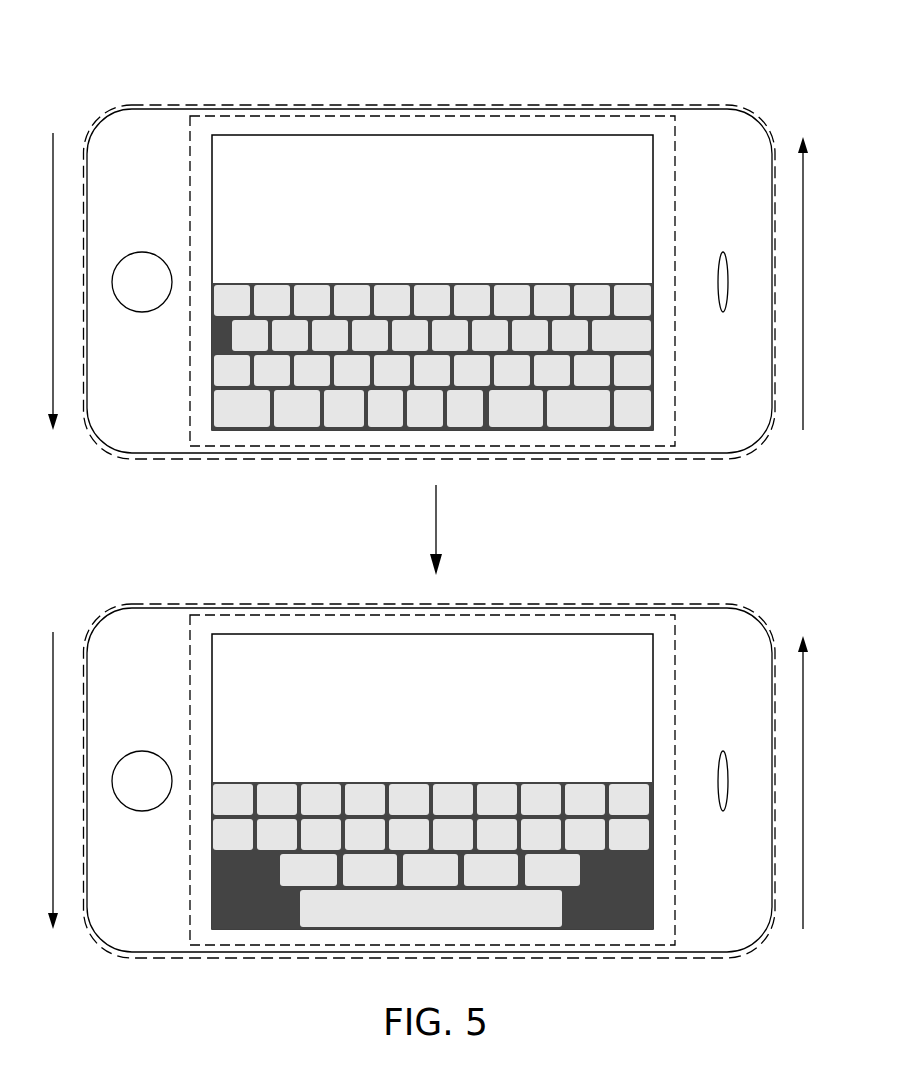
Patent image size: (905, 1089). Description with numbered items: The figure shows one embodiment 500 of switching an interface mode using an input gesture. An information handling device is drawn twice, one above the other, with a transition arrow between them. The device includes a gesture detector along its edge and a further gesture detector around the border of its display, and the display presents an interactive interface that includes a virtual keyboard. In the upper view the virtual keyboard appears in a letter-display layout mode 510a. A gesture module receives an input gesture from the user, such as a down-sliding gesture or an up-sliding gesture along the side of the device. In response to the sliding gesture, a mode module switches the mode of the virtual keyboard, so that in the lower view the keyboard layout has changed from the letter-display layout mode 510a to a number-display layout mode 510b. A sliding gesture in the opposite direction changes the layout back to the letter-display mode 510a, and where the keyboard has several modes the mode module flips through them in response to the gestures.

The embodiment of switching an interface mode 500 is at (121, 42).
The letter-display layout mode 510a is at (447, 297).
The number-display layout mode 510b is at (431, 797).